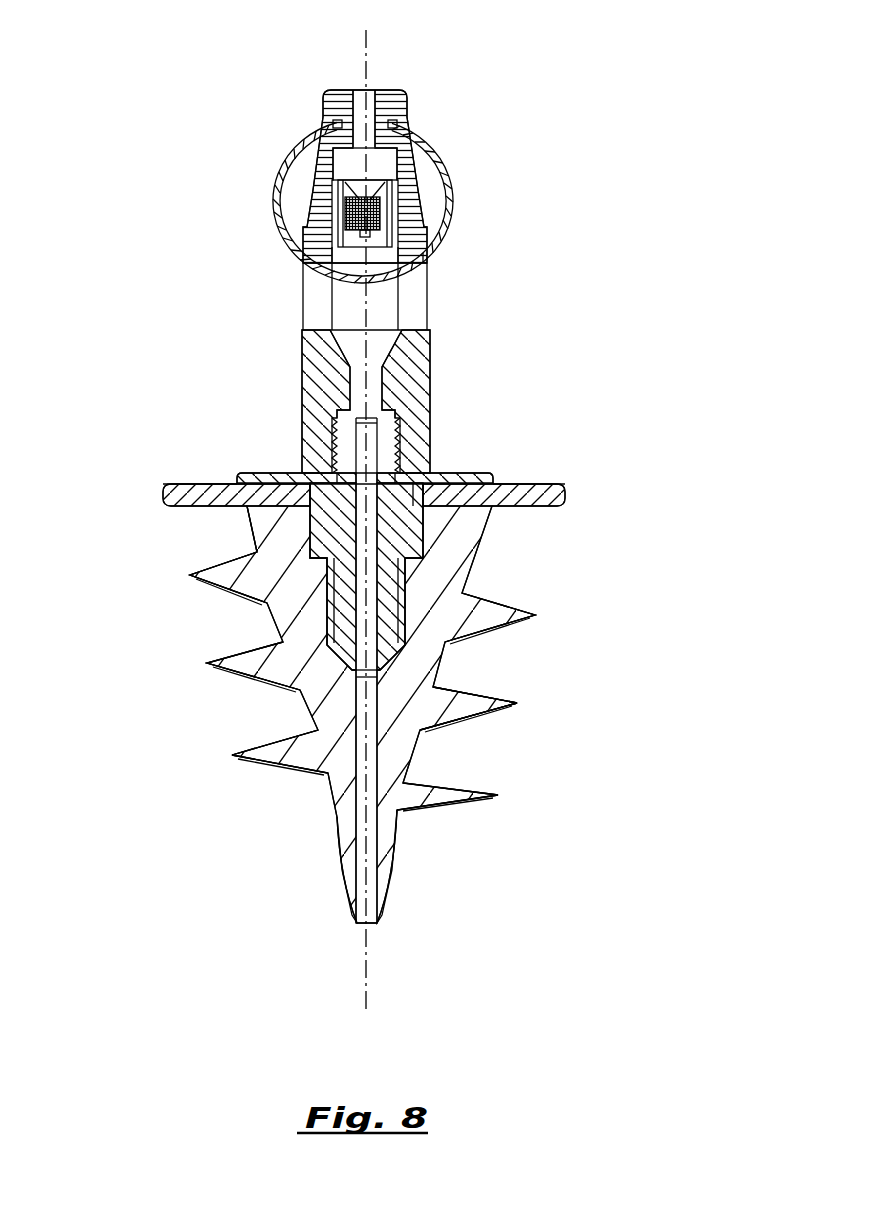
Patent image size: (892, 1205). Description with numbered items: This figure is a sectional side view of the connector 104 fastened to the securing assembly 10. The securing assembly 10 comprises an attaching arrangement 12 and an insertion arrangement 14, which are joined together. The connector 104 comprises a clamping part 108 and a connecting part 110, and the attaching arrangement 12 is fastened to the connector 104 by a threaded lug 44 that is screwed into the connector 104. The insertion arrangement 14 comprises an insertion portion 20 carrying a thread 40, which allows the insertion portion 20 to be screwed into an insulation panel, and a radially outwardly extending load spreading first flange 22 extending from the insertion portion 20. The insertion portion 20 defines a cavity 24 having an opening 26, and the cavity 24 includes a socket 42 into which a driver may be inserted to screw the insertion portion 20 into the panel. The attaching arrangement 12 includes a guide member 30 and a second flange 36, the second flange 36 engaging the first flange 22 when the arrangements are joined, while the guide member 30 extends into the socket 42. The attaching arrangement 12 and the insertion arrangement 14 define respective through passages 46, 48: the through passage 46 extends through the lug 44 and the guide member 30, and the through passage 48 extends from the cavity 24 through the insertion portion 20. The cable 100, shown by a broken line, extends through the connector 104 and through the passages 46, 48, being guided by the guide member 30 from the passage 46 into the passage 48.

The securing assembly 10 is at (176, 552).
The attaching arrangement 12 is at (266, 462).
The insertion arrangement 14 is at (237, 717).
The insertion portion 20 is at (491, 658).
The first flange 22 is at (548, 480).
The cavity 24 is at (287, 530).
The opening 26 is at (413, 490).
The guide member 30 is at (393, 578).
The second flange 36 is at (250, 473).
The thread 40 is at (480, 717).
The socket 42 is at (338, 602).
The threaded lug 44 is at (333, 425).
The through passage 46 is at (372, 528).
The through passage 48 is at (360, 778).
The cable 100 is at (378, 828).
The connector 104 is at (445, 337).
The clamping part 108 is at (427, 187).
The connecting part 110 is at (433, 398).